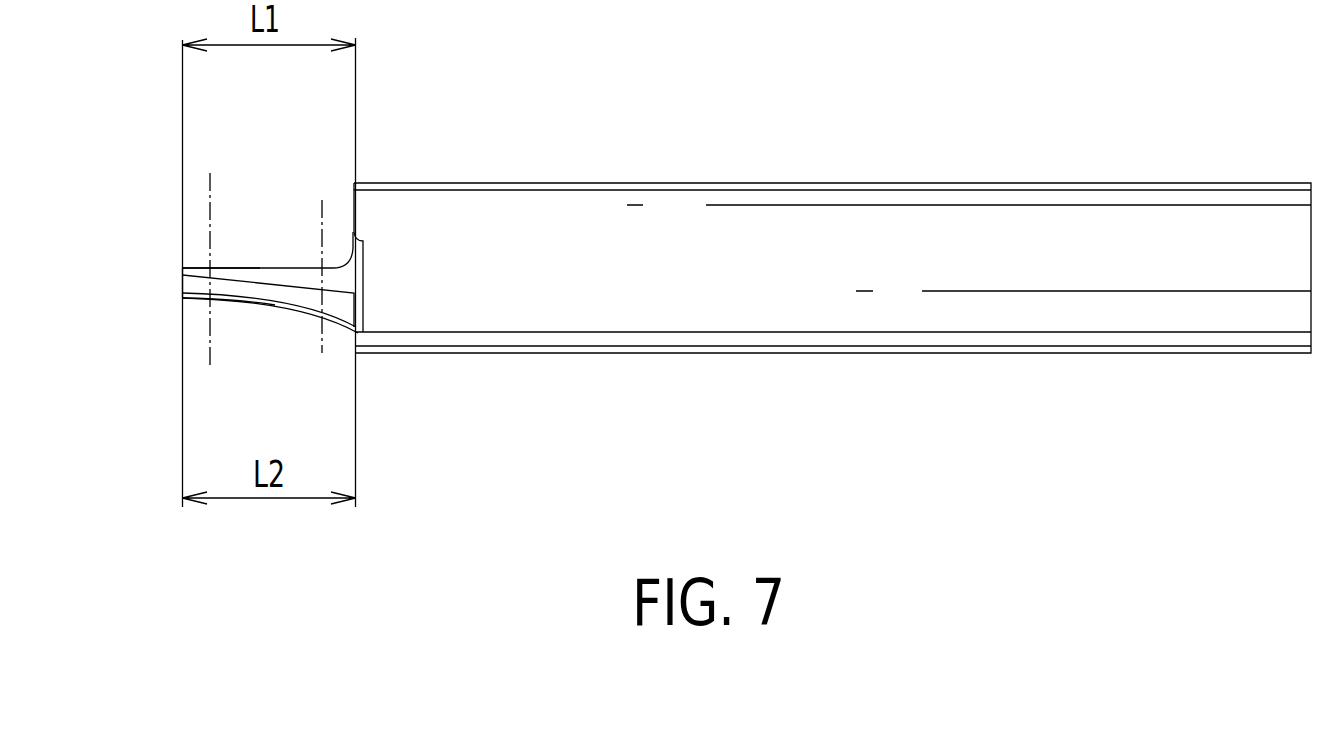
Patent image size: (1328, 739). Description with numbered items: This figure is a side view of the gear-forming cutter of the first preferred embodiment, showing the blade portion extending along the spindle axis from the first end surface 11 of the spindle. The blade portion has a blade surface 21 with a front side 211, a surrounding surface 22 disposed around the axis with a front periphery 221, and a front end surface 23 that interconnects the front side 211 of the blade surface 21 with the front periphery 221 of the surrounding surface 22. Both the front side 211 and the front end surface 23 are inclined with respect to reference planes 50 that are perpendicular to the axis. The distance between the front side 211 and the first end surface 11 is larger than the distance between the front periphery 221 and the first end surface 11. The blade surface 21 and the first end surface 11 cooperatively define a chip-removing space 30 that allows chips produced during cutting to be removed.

The first end surface 11 is at (354, 212).
The blade surface 21 is at (260, 267).
The front side 211 is at (181, 268).
The surrounding surface 22 is at (262, 304).
The front periphery 221 is at (183, 300).
The front end surface 23 is at (182, 289).
The chip-removing space 30 is at (296, 261).
The reference planes 50 is at (213, 197).